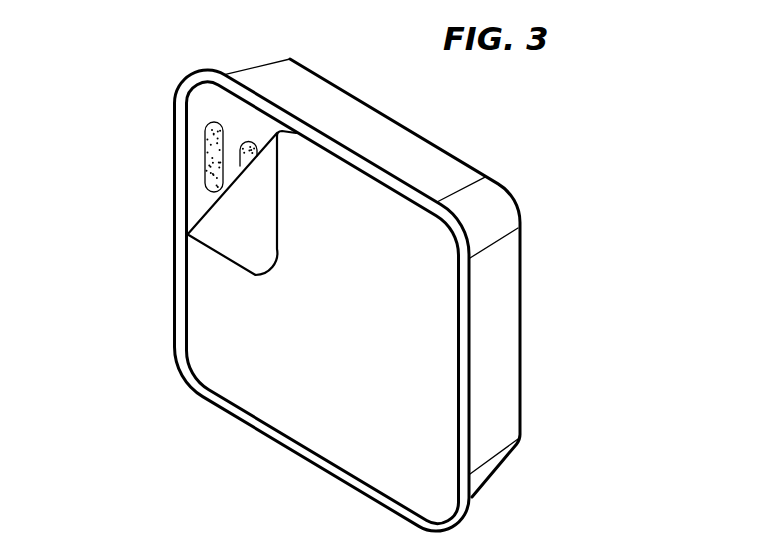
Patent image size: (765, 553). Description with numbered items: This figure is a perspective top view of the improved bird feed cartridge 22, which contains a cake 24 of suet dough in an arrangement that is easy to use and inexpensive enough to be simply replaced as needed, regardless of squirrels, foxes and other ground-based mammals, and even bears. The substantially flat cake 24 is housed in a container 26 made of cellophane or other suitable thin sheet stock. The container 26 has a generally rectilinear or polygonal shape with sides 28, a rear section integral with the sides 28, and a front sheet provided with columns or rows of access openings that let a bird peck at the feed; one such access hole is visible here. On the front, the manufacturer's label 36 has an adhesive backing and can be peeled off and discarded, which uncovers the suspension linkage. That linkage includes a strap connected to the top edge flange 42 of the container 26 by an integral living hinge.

The cartridge 22 is at (128, 293).
The cake 24 is at (205, 133).
The container 26 is at (436, 158).
The sides 28 is at (373, 117).
The manufacturer's label 36 is at (334, 315).
The top edge flange 42 is at (175, 175).